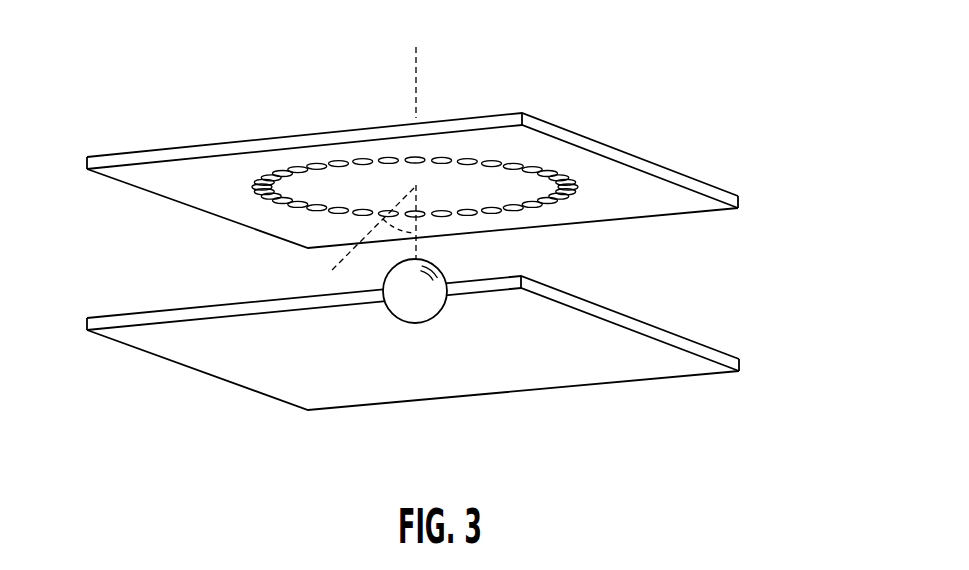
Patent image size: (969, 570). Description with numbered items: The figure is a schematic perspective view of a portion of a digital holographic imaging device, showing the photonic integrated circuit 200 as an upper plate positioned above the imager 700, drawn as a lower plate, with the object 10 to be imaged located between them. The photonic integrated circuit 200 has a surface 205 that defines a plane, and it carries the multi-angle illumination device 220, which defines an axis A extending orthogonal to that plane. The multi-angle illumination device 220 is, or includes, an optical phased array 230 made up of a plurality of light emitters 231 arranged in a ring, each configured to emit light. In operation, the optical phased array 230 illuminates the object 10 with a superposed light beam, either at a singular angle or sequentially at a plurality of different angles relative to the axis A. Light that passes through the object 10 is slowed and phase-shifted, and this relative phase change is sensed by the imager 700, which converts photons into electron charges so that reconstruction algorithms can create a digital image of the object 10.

The photonic integrated circuit 200 is at (170, 47).
The surface 205 is at (172, 175).
The multi-angle illumination device 220 is at (640, 198).
The optical phased array 230 is at (552, 203).
The light emitter 231 is at (268, 190).
The object to be imaged 10 is at (444, 281).
The imager 700 is at (572, 353).
The axis A is at (417, 219).